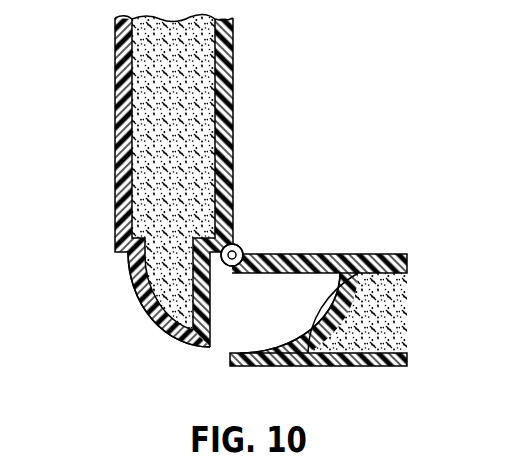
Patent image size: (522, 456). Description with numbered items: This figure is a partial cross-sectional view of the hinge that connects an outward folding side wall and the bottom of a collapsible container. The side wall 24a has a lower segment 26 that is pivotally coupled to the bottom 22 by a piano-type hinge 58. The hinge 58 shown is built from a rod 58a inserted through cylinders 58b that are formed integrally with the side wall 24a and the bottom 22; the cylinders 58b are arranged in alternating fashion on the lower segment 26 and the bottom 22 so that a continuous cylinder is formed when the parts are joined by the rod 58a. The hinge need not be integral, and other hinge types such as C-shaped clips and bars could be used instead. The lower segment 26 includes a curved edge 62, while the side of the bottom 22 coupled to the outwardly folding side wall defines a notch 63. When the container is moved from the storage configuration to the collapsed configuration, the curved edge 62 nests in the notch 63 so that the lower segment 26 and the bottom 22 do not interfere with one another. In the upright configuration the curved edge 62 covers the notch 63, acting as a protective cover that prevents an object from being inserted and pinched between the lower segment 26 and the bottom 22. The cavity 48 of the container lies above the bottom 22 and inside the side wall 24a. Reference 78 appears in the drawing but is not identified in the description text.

The bottom 22 is at (379, 255).
The side wall 24a is at (115, 101).
The lower segment 26 is at (234, 101).
The cavity 48 is at (360, 157).
The hinge 58 is at (237, 230).
The rod 58a is at (233, 264).
The cylinders 58b is at (243, 250).
The curved edge 62 is at (150, 315).
The notch 63 is at (342, 337).
The indicator 78 is at (113, 453).